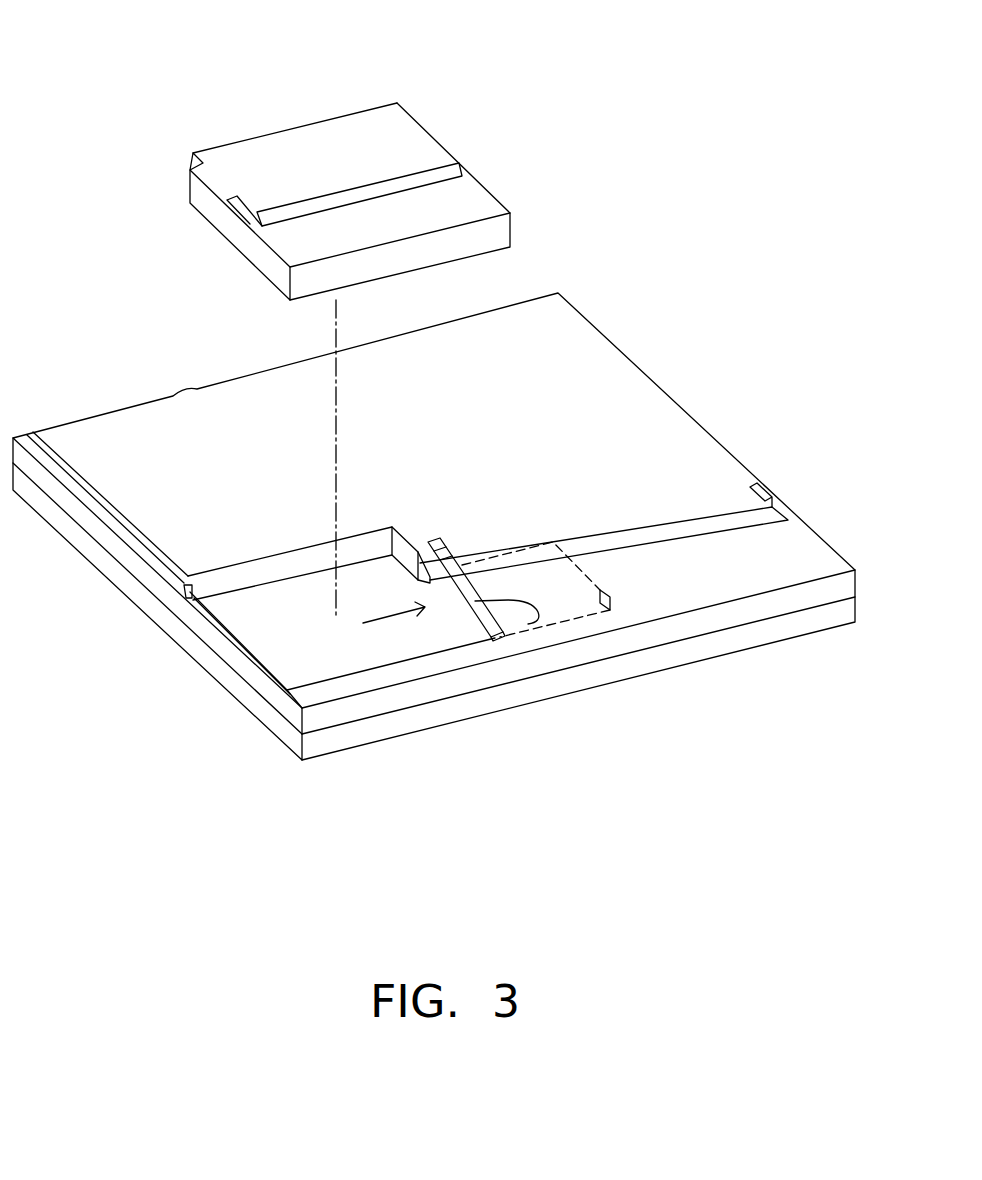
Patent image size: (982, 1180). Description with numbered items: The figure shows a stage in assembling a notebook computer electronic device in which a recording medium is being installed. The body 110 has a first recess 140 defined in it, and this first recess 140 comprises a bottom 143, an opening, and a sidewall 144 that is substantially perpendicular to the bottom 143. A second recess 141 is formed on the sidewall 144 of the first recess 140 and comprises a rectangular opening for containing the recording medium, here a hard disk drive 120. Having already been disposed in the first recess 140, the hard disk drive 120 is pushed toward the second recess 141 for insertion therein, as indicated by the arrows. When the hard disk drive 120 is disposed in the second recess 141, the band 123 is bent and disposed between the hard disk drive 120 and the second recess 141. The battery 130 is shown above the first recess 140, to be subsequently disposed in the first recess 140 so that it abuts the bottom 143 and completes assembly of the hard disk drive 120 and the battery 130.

The body 110 is at (683, 443).
The hard disk drive 120 is at (470, 612).
The band 123 is at (540, 598).
The battery 130 is at (309, 157).
The first recess 140 is at (346, 650).
The second recess 141 is at (448, 600).
The bottom 143 is at (260, 634).
The sidewall 144 is at (418, 563).